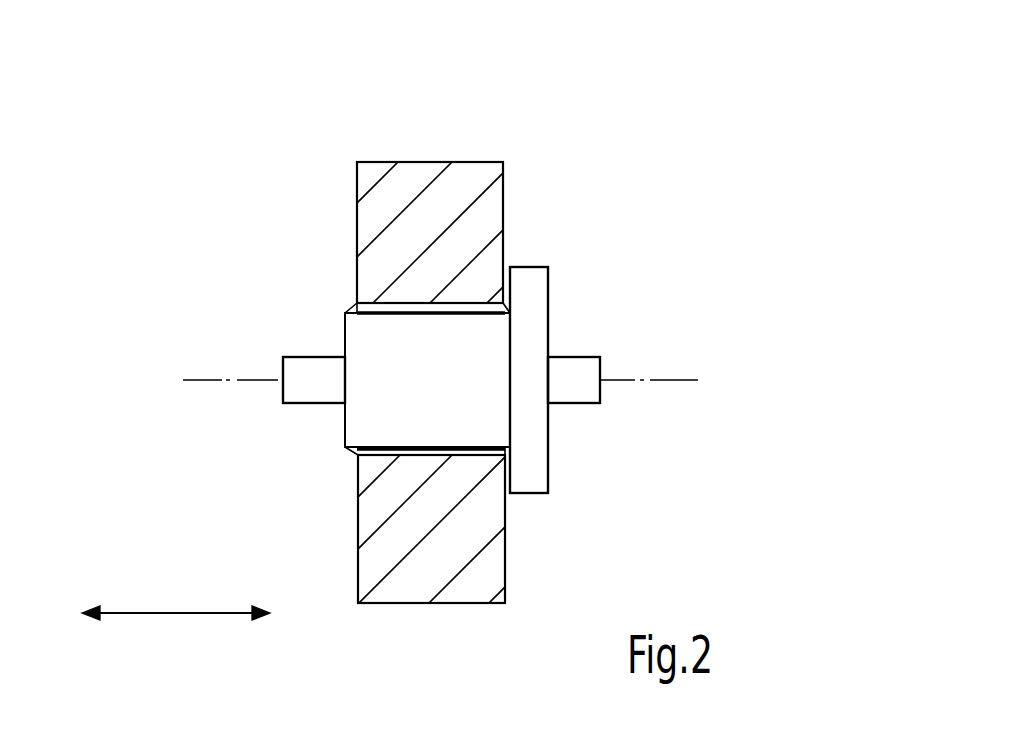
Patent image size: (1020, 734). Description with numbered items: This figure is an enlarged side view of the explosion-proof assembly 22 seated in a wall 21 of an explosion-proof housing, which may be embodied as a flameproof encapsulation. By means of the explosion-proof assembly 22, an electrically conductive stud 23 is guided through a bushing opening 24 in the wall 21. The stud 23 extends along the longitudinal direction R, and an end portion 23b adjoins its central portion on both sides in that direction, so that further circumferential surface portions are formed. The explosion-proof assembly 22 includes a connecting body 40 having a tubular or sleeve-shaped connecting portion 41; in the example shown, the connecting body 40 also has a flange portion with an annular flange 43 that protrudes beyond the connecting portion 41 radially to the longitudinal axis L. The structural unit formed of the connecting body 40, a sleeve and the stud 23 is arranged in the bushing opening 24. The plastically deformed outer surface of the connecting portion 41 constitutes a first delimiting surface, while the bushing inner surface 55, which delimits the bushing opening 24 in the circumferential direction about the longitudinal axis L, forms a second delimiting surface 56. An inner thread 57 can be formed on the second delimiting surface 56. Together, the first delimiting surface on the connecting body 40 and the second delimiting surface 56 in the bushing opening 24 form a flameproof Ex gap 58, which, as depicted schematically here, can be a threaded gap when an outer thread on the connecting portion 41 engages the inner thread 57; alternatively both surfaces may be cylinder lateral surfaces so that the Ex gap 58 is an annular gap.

The wall 21 is at (430, 177).
The explosion-proof assembly 22 is at (623, 172).
The electrically conductive stud 23 is at (565, 355).
The end portion 23b is at (573, 398).
The bushing opening 24 is at (385, 312).
The connecting body 40 is at (543, 473).
The connecting portion 41 is at (413, 406).
The annular flange 43 is at (527, 280).
The bushing inner surface 55 is at (447, 450).
The second delimiting surface 56 is at (449, 443).
The inner thread 57 is at (398, 297).
The flameproof Ex gap 58 is at (455, 303).
The longitudinal axis L is at (676, 380).
The longitudinal direction R is at (170, 613).